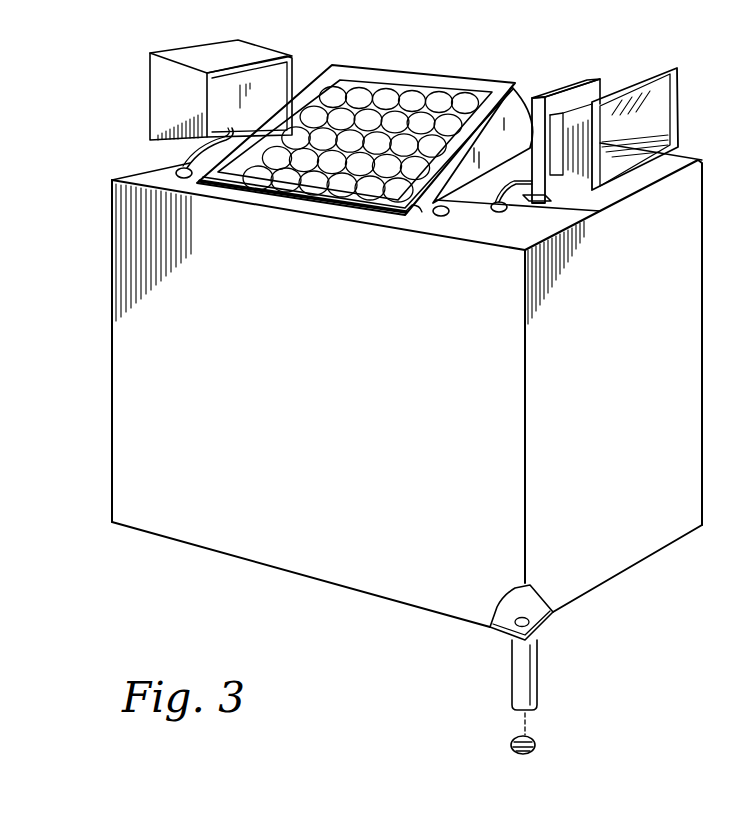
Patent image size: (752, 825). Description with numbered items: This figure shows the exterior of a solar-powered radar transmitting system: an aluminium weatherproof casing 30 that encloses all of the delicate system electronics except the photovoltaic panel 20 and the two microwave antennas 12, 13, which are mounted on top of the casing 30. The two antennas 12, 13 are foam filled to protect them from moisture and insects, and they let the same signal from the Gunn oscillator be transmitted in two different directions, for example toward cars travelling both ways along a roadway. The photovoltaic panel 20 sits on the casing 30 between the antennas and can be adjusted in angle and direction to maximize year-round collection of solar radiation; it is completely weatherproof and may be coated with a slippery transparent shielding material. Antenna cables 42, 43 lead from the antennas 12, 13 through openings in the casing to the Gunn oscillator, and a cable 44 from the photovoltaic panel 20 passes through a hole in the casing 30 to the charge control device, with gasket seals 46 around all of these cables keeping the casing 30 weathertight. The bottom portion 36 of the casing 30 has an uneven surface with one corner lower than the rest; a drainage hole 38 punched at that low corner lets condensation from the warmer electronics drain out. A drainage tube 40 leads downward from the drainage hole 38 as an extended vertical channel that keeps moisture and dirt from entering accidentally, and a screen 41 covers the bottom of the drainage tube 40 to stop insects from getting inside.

The microwave antenna 12 is at (633, 82).
The microwave antenna 13 is at (150, 93).
The photovoltaic panel 20 is at (408, 97).
The weatherproof casing 30 is at (110, 330).
The bottom portion 36 is at (317, 584).
The drainage hole 38 is at (528, 615).
The drainage tube 40 is at (512, 671).
The screen 41 is at (510, 745).
The antenna cable 42 is at (505, 186).
The antenna cable 43 is at (190, 163).
The cable 44 is at (435, 203).
The gasket seal 46 is at (178, 174).